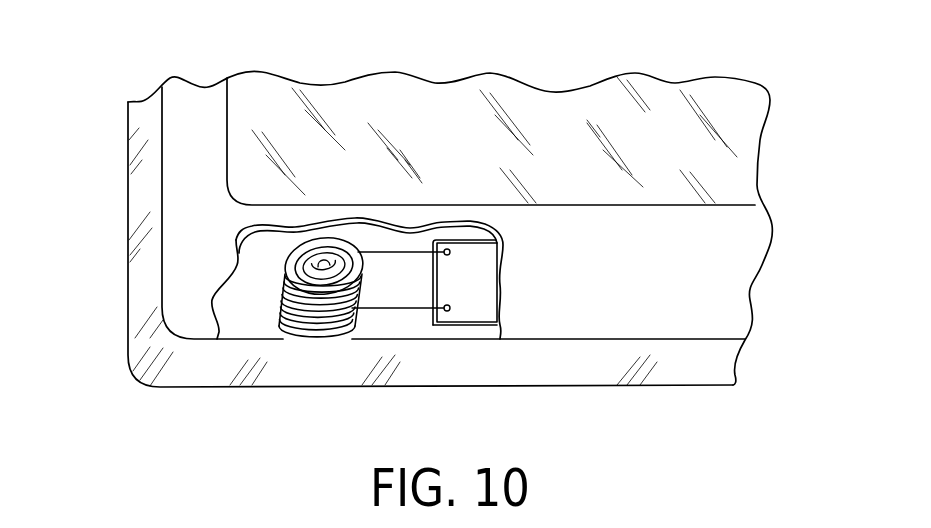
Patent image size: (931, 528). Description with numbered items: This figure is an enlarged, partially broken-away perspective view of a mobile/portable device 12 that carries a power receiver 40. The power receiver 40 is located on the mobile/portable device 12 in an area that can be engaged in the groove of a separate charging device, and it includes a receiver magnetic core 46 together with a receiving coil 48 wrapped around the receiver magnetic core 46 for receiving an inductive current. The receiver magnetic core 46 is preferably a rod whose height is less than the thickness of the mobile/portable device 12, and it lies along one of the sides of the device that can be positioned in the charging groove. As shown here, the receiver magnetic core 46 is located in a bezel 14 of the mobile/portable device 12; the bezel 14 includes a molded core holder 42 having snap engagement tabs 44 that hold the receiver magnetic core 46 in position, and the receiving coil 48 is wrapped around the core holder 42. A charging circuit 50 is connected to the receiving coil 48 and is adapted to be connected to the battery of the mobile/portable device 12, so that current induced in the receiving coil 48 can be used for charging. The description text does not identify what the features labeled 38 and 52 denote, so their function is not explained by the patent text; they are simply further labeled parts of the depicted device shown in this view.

The mobile/portable device 12 is at (738, 98).
The bezel 14 is at (182, 288).
The flange 38 is at (570, 365).
The power receiver 40 is at (266, 265).
The molded core holder 42 is at (295, 337).
The snap engagement tabs 44 is at (328, 268).
The receiver magnetic core 46 is at (325, 258).
The receiving coil 48 is at (407, 310).
The charging circuit 50 is at (475, 303).
The opening 52 is at (467, 240).